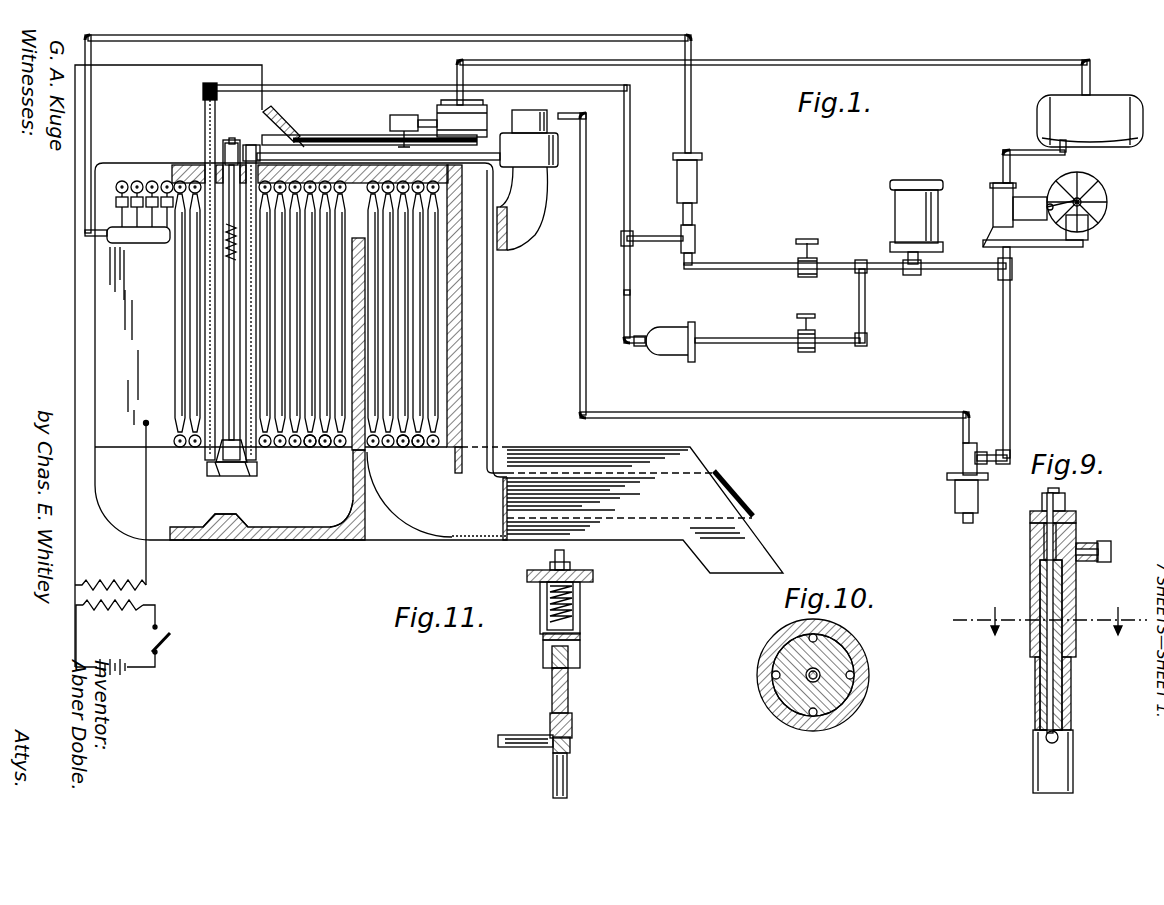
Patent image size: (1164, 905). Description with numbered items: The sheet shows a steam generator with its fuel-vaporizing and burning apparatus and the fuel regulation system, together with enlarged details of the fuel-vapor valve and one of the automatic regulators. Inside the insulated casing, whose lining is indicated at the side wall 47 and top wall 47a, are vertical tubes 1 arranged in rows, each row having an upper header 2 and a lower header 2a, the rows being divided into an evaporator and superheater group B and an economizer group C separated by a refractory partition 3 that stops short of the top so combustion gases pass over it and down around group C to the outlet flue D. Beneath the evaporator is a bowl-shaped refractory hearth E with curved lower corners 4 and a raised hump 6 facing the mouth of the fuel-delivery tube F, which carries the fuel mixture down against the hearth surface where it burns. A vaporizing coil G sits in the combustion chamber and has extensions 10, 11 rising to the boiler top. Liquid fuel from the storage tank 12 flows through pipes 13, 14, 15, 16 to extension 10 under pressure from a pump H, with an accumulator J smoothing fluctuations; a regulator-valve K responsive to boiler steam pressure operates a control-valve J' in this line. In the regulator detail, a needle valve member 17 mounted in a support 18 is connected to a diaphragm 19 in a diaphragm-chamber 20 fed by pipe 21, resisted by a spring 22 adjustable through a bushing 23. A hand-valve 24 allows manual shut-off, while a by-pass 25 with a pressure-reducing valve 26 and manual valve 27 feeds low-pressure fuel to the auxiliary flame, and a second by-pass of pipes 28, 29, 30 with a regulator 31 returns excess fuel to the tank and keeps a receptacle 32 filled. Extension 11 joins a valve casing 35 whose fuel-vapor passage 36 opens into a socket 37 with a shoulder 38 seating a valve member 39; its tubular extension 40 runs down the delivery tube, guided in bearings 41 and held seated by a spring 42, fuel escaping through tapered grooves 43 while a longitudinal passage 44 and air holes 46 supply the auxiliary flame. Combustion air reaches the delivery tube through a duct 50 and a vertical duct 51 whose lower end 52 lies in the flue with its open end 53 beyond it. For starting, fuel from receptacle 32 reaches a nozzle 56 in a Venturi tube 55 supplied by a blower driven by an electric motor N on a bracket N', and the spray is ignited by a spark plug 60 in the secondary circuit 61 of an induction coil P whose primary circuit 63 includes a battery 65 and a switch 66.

In FIG. 1, the tubes 1 is at (332, 314).
In FIG. 1, the upper header 2 is at (152, 182).
In FIG. 1, the lower header 2a is at (326, 447).
In FIG. 1, the refractory wall or partition 3 is at (367, 282).
In FIG. 1, the lower corners and angles 4 is at (337, 512).
In FIG. 1, the raised portion or hump 6 is at (233, 524).
In FIG. 1, the vaporizer extension 10 is at (204, 94).
In FIG. 9, the vaporizer extension 10 is at (1048, 621).
In FIG. 1, the vaporizer extension 11 is at (258, 452).
In FIG. 9, the vaporizer extension 11 is at (1086, 543).
In FIG. 1, the storage tank 12 is at (1063, 100).
In FIG. 1, the pipe 13 is at (1034, 161).
In FIG. 1, the pipe 14 is at (892, 272).
In FIG. 11, the pipe 14 is at (567, 779).
In FIG. 1, the pipe 15 is at (657, 243).
In FIG. 11, the pipe 15 is at (508, 746).
In FIG. 1, the pipe 16 is at (598, 92).
In FIG. 11, the needle valve member 17 is at (568, 702).
In FIG. 11, the support 18 is at (550, 722).
In FIG. 11, the diaphragm 19 is at (593, 576).
In FIG. 11, the diaphragm-chamber 20 is at (527, 573).
In FIG. 1, the pipe 21 is at (318, 40).
In FIG. 11, the pipe 21 is at (565, 556).
In FIG. 11, the spring 22 is at (575, 609).
In FIG. 11, the bushing 23 is at (552, 651).
In FIG. 1, the hand-valve 24 is at (800, 256).
In FIG. 1, the by-pass 25 is at (630, 302).
In FIG. 1, the pressure-reducing valve 26 is at (678, 345).
In FIG. 1, the manual valve 27 is at (800, 335).
In FIG. 1, the pipe 28 is at (1010, 368).
In FIG. 1, the pipe 29 is at (580, 270).
In FIG. 1, the pipe 30 is at (770, 65).
In FIG. 1, the regulator 31 is at (962, 492).
In FIG. 1, the chamber or receptacle 32 is at (462, 118).
In FIG. 9, the valve casing 35 is at (1078, 570).
In FIG. 1, the fuel-vapor passage 36 is at (235, 140).
In FIG. 9, the fuel-vapor passage 36 is at (1031, 556).
In FIG. 9, the socket 37 is at (1036, 592).
In FIG. 9, the shoulder 38 is at (1040, 580).
In FIG. 10, the valve member 39 is at (846, 658).
In FIG. 9, the valve member 39 is at (1072, 664).
In FIG. 1, the tubular extension 40 is at (198, 330).
In FIG. 9, the tubular extension 40 is at (1034, 770).
In FIG. 1, the bearings 41 is at (157, 430).
In FIG. 1, the spring 42 is at (217, 249).
In FIG. 10, the grooves 43 is at (868, 665).
In FIG. 10, the longitudinal passage 44 is at (822, 678).
In FIG. 9, the longitudinal passage 44 is at (1042, 666).
In FIG. 9, the holes 46 is at (1045, 738).
In FIG. 1, the insulating wall 47 is at (465, 330).
In FIG. 1, the insulating top 47a is at (358, 160).
In FIG. 1, the conduit or duct 50 is at (326, 135).
In FIG. 1, the duct 51 is at (480, 358).
In FIG. 1, the lower end 52 is at (545, 468).
In FIG. 1, the open end 53 is at (733, 490).
In FIG. 1, the Venturi tube 55 is at (356, 160).
In FIG. 1, the fuel nozzle 56 is at (413, 121).
In FIG. 1, the spark plug 60 is at (282, 120).
In FIG. 1, the circuit 61 is at (163, 63).
In FIG. 1, the circuit 63 is at (77, 634).
In FIG. 1, the battery 65 is at (127, 672).
In FIG. 1, the switch 66 is at (170, 645).
In FIG. 1, the tube group B is at (294, 234).
In FIG. 1, the tube group C is at (410, 378).
In FIG. 1, the outlet funnel or flue D is at (416, 522).
In FIG. 1, the bowl or dish-shaped hearth E is at (267, 507).
In FIG. 1, the fuel-delivery tube F is at (228, 395).
In FIG. 1, the vaporizing coil G is at (230, 470).
In FIG. 1, the pump H is at (1032, 220).
In FIG. 1, the accumulator J is at (904, 219).
In FIG. 11, the control-valve J' is at (585, 739).
In FIG. 1, the regulator-valve K is at (697, 188).
In FIG. 11, the regulator-valve K is at (580, 650).
In FIG. 1, the electric motor N is at (529, 138).
In FIG. 1, the bracket N' is at (532, 208).
In FIG. 1, the induction coil P is at (148, 597).